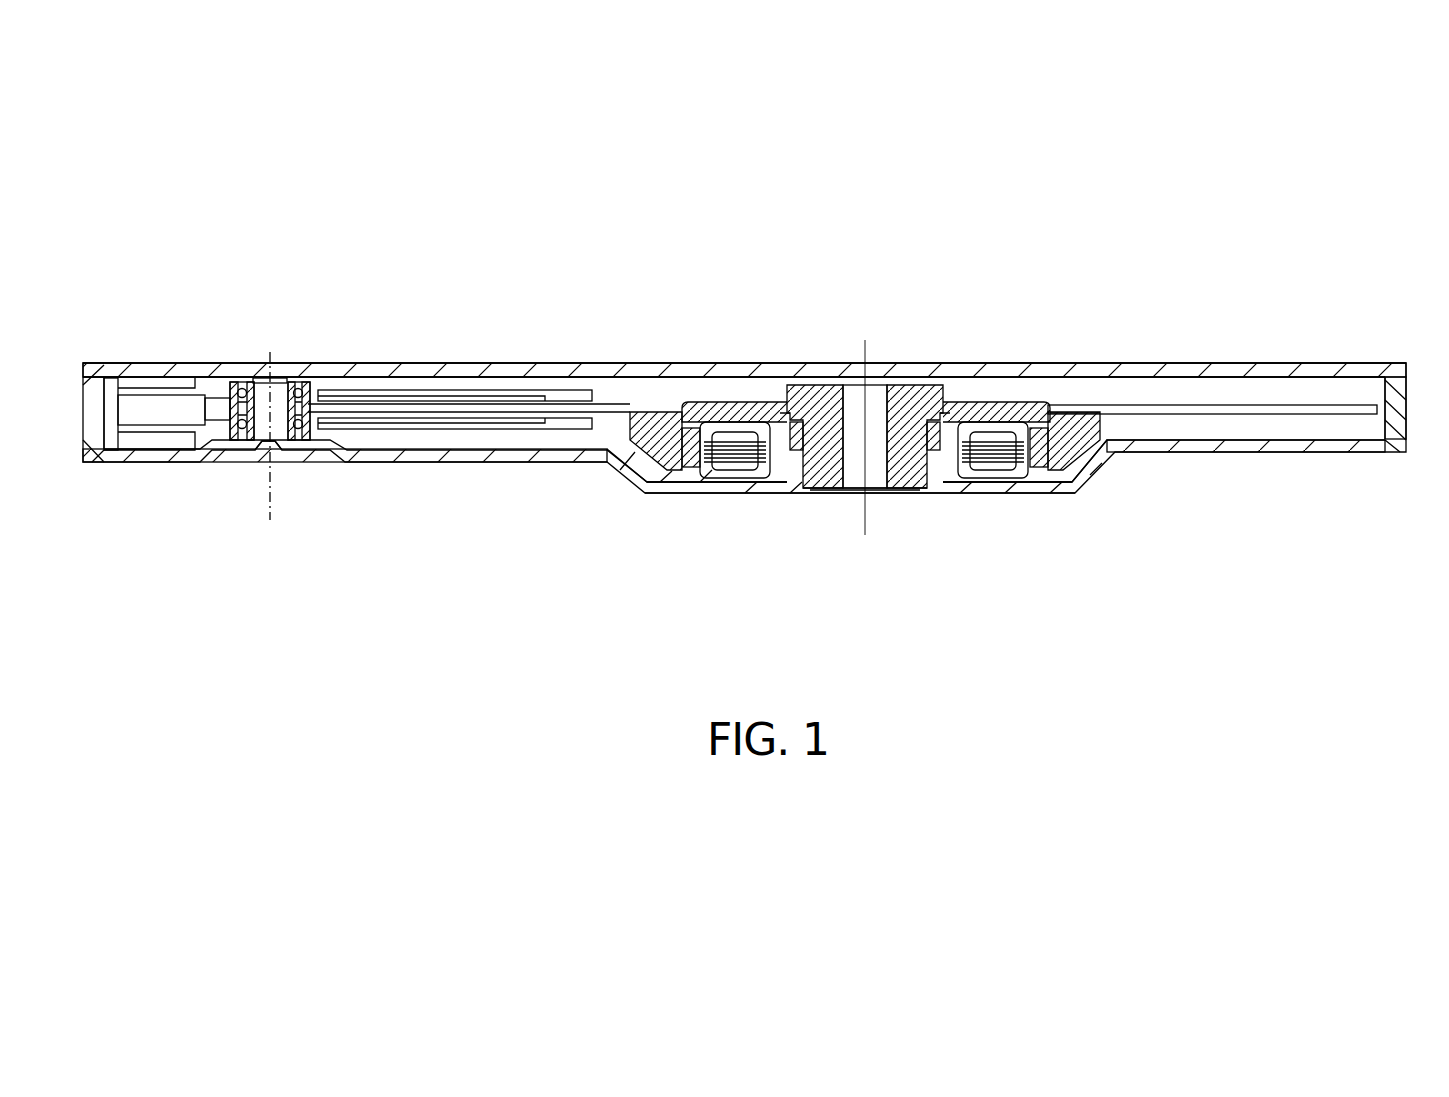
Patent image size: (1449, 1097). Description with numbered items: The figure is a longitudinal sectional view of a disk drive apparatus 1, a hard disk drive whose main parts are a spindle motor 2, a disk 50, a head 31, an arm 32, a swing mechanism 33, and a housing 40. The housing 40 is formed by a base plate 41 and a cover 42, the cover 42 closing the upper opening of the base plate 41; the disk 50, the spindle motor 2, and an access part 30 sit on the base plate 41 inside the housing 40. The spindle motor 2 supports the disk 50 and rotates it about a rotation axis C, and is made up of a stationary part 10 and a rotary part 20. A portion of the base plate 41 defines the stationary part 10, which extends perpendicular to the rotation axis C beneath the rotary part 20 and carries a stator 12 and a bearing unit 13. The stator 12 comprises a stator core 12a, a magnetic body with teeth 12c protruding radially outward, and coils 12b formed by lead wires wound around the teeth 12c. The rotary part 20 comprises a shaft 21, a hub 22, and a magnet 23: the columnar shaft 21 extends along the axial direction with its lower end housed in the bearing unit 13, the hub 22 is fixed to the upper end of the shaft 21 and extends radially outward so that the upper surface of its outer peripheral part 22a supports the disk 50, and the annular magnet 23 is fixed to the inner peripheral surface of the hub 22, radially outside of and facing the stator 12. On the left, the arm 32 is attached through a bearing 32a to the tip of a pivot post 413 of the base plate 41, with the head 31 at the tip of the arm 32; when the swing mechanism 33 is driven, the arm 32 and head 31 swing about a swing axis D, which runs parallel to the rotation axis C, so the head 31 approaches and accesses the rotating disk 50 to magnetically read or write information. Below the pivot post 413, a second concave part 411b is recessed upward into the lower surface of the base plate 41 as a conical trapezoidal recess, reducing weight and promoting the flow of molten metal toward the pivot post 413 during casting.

The disk drive apparatus 1 is at (1292, 263).
The spindle motor 2 is at (865, 464).
The stationary part 10 is at (810, 504).
The stator 12 is at (879, 520).
The stator core 12a is at (1040, 468).
The coils 12b is at (995, 480).
The teeth 12c is at (712, 480).
The bearing unit 13 is at (903, 492).
The rotary part 20 is at (715, 400).
The shaft 21 is at (872, 392).
The hub 22 is at (865, 369).
The outer peripheral part 22a is at (625, 402).
The magnet 23 is at (1060, 410).
The access part 30 is at (557, 255).
The head 31 is at (557, 418).
The arm 32 is at (483, 392).
The bearing 32a is at (300, 383).
The swing mechanism 33 is at (163, 385).
The housing 40 is at (766, 359).
The base plate 41 is at (1406, 440).
The cover 42 is at (744, 335).
The disk 50 is at (1155, 414).
The second concave part 411b is at (258, 452).
The pivot post 413 is at (264, 383).
The rotation axis C is at (862, 348).
The swing axis D is at (258, 488).